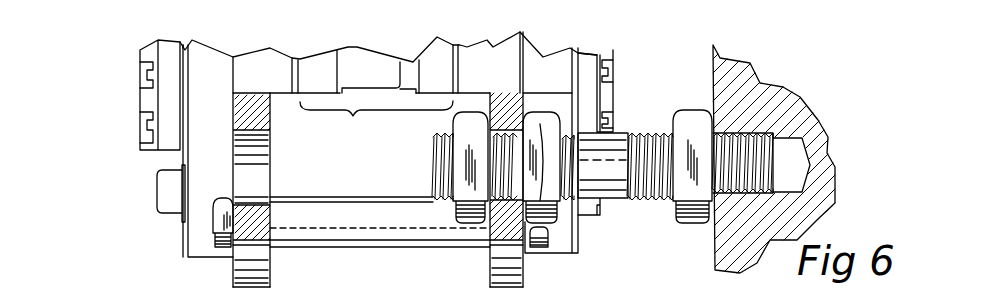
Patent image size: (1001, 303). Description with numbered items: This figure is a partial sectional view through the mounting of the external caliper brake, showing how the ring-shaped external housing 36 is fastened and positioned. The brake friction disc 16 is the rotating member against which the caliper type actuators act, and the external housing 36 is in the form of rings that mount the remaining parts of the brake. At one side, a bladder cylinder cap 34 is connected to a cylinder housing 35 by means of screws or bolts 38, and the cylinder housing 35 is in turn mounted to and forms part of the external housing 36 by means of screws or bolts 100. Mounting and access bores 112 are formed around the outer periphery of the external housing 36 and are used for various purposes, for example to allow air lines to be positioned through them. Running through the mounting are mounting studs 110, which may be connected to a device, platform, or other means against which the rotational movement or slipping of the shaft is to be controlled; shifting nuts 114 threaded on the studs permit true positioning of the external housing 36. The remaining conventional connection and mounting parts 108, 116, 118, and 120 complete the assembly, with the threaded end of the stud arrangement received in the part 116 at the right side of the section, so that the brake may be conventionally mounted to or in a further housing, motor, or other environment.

The brake friction disc 16 is at (342, 145).
The bladder cylinder cap 34 is at (140, 50).
The cylinder housing 35 is at (187, 232).
The external housing 36 is at (272, 276).
The screws or bolts 38 is at (142, 116).
The screws or bolts 100 is at (157, 190).
The connection and/or mounting part 108 is at (213, 237).
The mounting stud 110 is at (610, 199).
The mounting and access bore 112 is at (247, 200).
The shifting nut 114 is at (450, 123).
The connection and/or mounting part 116 is at (712, 57).
The connection and/or mounting part 118 is at (785, 139).
The connection and/or mounting part 120 is at (330, 203).